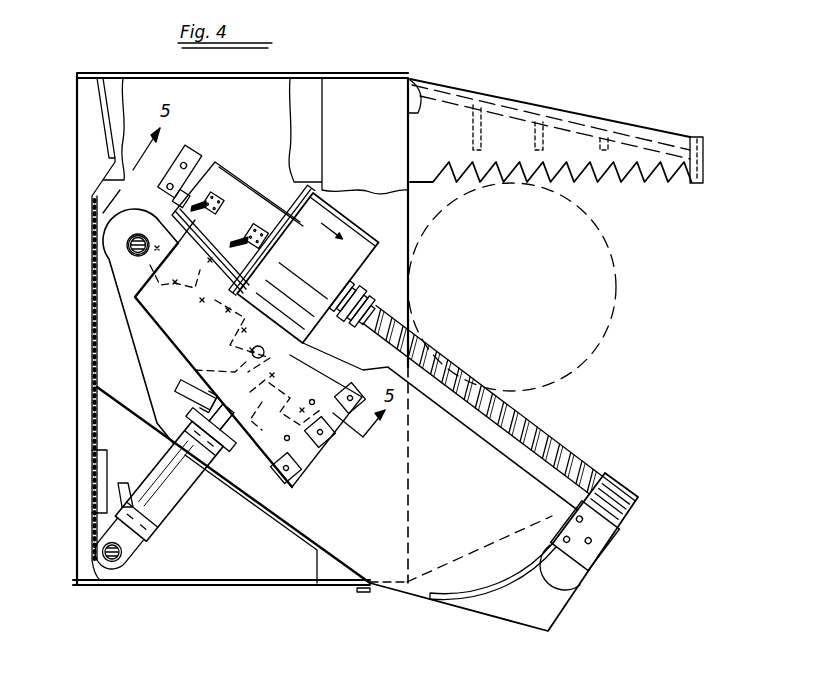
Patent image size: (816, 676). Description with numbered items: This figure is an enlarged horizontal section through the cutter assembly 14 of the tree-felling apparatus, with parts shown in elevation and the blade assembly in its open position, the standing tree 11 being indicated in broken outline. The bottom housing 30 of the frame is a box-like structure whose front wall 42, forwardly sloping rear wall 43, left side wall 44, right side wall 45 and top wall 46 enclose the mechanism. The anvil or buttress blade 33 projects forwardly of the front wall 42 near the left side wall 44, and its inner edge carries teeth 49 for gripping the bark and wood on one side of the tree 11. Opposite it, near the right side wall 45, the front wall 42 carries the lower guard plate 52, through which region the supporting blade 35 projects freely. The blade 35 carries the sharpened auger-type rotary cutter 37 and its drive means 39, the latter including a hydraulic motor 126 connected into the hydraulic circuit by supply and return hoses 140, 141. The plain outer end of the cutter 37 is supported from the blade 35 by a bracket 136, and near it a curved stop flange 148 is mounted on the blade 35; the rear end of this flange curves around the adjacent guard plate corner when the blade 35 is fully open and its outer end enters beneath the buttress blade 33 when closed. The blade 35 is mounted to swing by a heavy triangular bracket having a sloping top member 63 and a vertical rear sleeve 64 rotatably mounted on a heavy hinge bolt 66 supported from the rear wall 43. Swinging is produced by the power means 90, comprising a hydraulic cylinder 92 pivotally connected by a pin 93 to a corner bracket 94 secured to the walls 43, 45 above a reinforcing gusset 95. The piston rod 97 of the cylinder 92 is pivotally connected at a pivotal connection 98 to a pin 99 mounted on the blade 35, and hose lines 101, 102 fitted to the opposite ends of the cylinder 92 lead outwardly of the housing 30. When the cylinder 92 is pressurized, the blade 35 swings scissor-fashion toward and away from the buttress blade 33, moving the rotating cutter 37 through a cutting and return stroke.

The standing tree 11 is at (577, 305).
The cutter assembly 14 is at (556, 133).
The bottom housing 30 is at (268, 88).
The buttress blade 33 is at (585, 140).
The supporting blade 35 is at (537, 620).
The rotary cutter 37 is at (510, 420).
The drive means 39 is at (345, 238).
The front wall 42 is at (420, 107).
The rear wall 43 is at (83, 122).
The left side wall 44 is at (332, 75).
The right side wall 45 is at (245, 585).
The top wall 46 is at (382, 100).
The teeth 49 is at (643, 185).
The lower guard plate 52 is at (555, 440).
The sloping top member 63 is at (258, 455).
The vertical rear sleeve 64 is at (120, 236).
The hinge bolt 66 is at (127, 250).
The power means 90 is at (180, 508).
The hydraulic cylinder 92 is at (170, 445).
The pin 93 is at (112, 565).
The corner bracket 94 is at (132, 570).
The reinforcing gusset 95 is at (255, 565).
The piston rod 97 is at (215, 372).
The pivotal connection 98 is at (260, 398).
The pin 99 is at (258, 352).
The hose line 101 is at (185, 392).
The hose line 102 is at (128, 483).
The hydraulic motor 126 is at (230, 193).
The bracket 136 is at (630, 505).
The supply hose 140 is at (198, 198).
The return hose 141 is at (243, 226).
The curved stop flange 148 is at (487, 587).